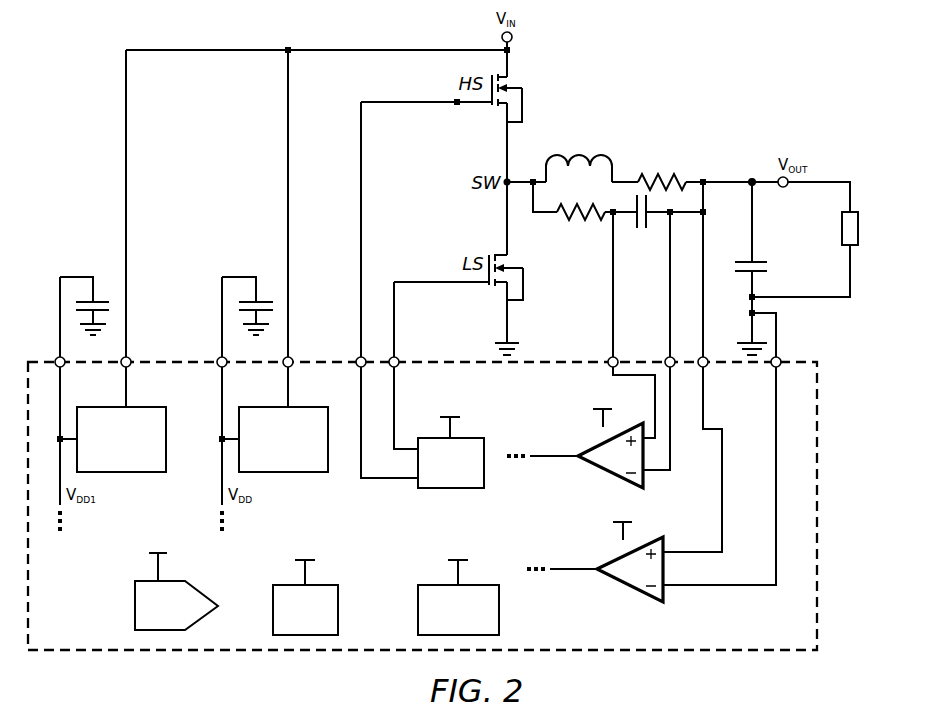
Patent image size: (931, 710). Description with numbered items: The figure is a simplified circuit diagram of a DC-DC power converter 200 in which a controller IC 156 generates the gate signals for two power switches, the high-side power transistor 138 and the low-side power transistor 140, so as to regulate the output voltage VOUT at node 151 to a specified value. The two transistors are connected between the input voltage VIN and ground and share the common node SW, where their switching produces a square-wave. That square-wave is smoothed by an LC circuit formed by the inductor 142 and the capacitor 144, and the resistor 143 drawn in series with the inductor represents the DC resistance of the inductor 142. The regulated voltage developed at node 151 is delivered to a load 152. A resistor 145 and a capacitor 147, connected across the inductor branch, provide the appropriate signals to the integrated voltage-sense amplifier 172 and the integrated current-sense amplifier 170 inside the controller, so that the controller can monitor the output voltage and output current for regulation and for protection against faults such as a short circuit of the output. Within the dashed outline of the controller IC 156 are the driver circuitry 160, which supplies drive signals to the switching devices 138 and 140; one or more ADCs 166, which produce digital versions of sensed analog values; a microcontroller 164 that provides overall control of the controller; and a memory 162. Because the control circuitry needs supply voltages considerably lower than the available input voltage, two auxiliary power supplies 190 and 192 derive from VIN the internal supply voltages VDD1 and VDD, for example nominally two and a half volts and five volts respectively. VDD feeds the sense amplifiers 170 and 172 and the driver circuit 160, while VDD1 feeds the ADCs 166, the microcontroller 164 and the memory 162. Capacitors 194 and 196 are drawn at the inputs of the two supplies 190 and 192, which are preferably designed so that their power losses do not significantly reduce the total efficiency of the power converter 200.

The power converter 200 is at (716, 59).
The high-side power transistor 138 is at (522, 86).
The low-side power transistor 140 is at (527, 270).
The inductor 142 is at (572, 157).
The resistor 143 is at (660, 173).
The capacitor 144 is at (767, 260).
The resistor 145 is at (563, 221).
The capacitor 147 is at (638, 203).
The output node 151 is at (753, 178).
The load 152 is at (842, 246).
The controller IC 156 is at (807, 645).
The driver circuitry 160 is at (447, 490).
The memory 162 is at (500, 610).
The microcontroller 164 is at (340, 598).
The ADCs 166 is at (200, 594).
The current-sense amplifier 170 is at (593, 445).
The voltage-sense amplifier 172 is at (637, 547).
The power supply 190 is at (151, 407).
The power supply 192 is at (310, 407).
The capacitor 194 is at (102, 300).
The capacitor 196 is at (267, 300).